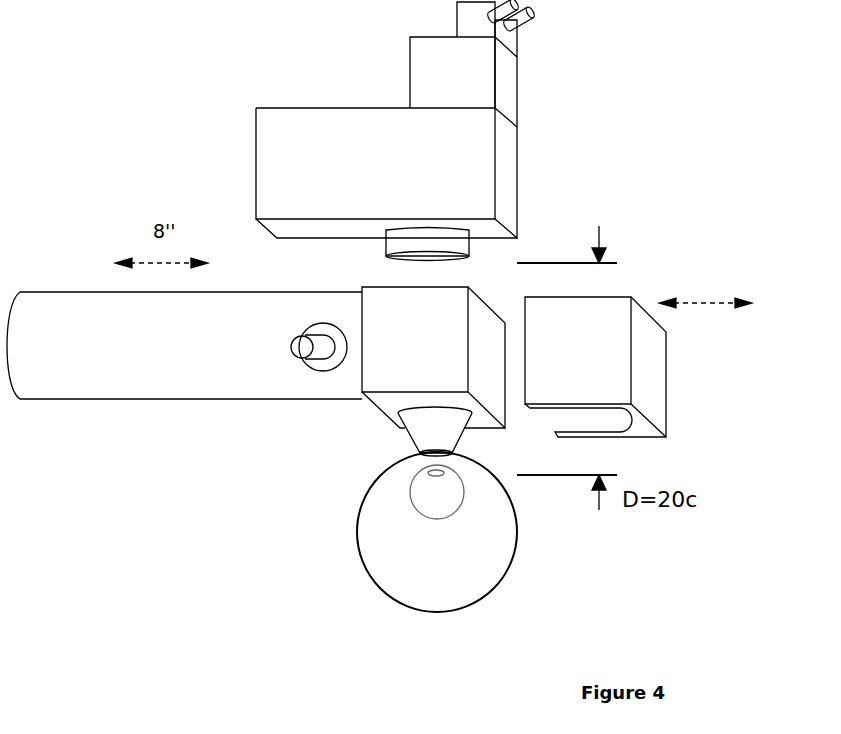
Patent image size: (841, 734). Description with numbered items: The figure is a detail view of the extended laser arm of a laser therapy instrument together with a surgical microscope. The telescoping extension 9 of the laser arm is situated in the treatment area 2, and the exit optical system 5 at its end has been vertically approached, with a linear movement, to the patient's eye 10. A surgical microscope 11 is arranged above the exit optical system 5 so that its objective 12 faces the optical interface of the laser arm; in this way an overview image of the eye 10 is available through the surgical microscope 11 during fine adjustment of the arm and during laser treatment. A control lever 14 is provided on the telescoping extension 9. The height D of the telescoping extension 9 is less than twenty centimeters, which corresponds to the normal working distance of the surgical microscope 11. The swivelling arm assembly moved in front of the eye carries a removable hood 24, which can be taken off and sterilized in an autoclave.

The treatment area 2 is at (362, 503).
The exit optical system 5 is at (408, 440).
The telescoping extension 9 is at (220, 400).
The patient's eye 10 is at (416, 510).
The surgical microscope 11 is at (517, 182).
The objective of the surgical microscope 12 is at (386, 246).
The control lever 14 is at (291, 353).
The removable hood 24 is at (663, 384).